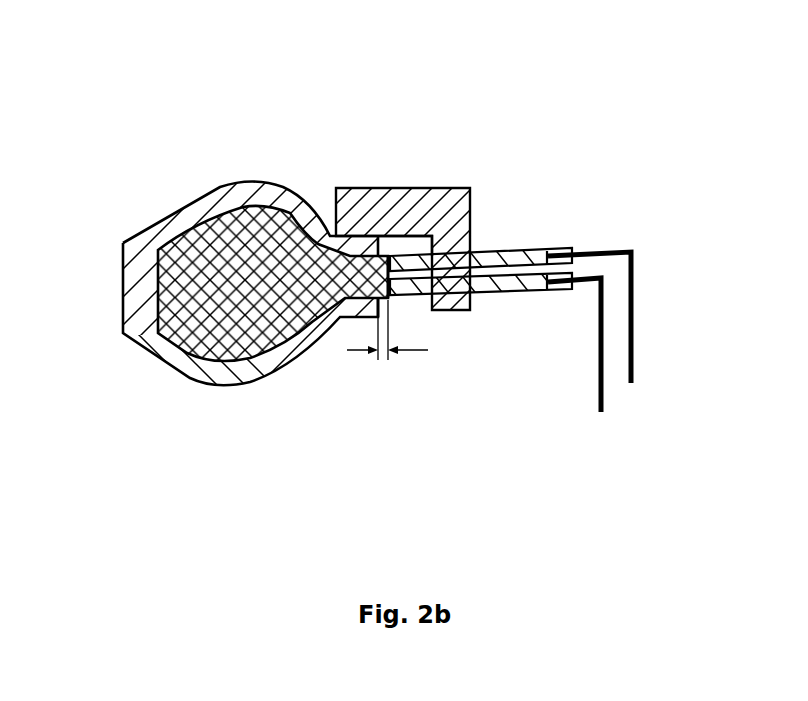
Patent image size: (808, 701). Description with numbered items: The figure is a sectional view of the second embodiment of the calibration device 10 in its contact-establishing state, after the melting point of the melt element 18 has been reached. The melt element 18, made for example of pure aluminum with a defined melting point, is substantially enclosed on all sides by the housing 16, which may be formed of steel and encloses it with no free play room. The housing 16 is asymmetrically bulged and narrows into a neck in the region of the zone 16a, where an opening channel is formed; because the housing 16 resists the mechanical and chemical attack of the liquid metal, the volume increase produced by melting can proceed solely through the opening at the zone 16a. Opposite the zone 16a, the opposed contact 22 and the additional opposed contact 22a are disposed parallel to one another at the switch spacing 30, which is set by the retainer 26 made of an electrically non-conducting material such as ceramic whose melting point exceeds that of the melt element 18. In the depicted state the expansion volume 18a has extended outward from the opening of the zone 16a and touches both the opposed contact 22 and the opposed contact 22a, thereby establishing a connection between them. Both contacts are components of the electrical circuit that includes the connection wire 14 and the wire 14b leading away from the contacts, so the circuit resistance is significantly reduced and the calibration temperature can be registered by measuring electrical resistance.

The calibration device 10 is at (395, 309).
The connection wire 14 is at (607, 354).
The second lead wire 14b is at (598, 385).
The housing 16 is at (256, 197).
The zone 16a is at (343, 318).
The melt element 18 is at (243, 330).
The expansion volume 18a is at (393, 302).
The opposed contact 22 is at (481, 271).
The additional opposed contact 22a is at (488, 285).
The retainer 26 is at (407, 200).
The switch spacing 30 is at (420, 352).